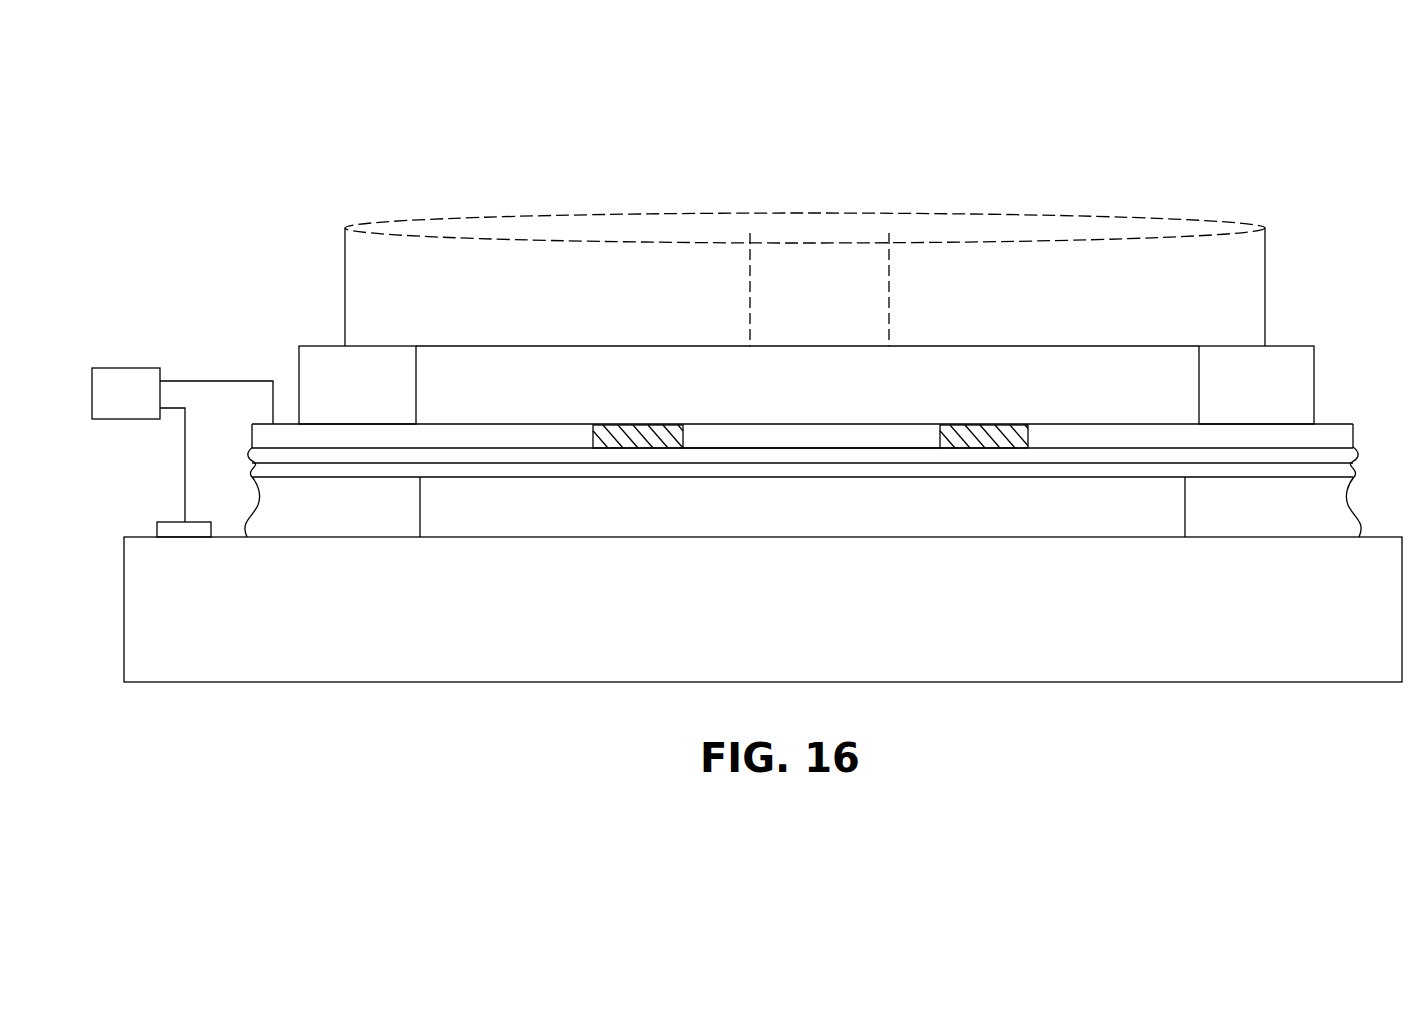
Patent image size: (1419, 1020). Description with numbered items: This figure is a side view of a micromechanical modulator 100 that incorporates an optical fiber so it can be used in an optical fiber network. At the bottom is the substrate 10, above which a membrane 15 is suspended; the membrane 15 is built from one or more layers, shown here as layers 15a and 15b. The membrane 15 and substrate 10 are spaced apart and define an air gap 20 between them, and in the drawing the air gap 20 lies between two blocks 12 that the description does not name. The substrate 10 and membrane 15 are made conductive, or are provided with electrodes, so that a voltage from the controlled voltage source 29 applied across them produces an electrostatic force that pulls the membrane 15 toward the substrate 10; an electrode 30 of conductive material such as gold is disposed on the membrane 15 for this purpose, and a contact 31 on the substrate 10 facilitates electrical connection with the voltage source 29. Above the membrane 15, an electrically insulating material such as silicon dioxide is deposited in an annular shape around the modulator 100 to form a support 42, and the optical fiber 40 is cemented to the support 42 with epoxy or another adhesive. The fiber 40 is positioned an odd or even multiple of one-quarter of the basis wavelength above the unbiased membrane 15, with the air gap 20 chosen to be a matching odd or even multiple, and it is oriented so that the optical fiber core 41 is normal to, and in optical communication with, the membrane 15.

The modulator 100 is at (572, 124).
The substrate 10 is at (764, 622).
The support members 12 is at (361, 525).
The membrane 15 is at (1362, 428).
The layer 15a is at (640, 458).
The layer 15b is at (528, 470).
The air gap 20 is at (824, 525).
The controlled voltage source 29 is at (128, 368).
The electrode 30 is at (846, 440).
The contact 31 is at (174, 530).
The optical fiber 40 is at (345, 255).
The optical fiber core 41 is at (818, 260).
The support 42 is at (376, 402).